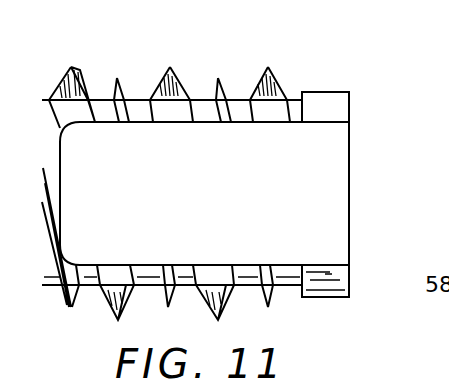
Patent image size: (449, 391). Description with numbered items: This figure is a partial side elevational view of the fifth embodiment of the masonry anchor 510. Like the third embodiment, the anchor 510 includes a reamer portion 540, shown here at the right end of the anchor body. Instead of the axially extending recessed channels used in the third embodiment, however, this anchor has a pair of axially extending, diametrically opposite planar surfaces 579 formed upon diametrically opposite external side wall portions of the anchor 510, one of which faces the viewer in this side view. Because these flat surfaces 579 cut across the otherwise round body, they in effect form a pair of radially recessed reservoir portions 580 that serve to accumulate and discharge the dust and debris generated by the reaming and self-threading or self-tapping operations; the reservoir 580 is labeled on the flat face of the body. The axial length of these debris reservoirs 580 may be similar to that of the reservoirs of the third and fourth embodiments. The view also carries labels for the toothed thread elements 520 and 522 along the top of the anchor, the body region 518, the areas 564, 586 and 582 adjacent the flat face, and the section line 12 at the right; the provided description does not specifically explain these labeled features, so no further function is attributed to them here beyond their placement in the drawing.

The masonry anchor 510 is at (86, 58).
The barb 520 is at (166, 66).
The barb 522 is at (219, 80).
The reamer portion 540 is at (350, 97).
The body 518 is at (350, 163).
The planar surfaces 579 is at (325, 220).
The surface 564 is at (315, 123).
The ridge 586 is at (222, 123).
The recess 582 is at (183, 126).
The reservoir portions 580 is at (183, 216).
The section line 12 is at (430, 62).